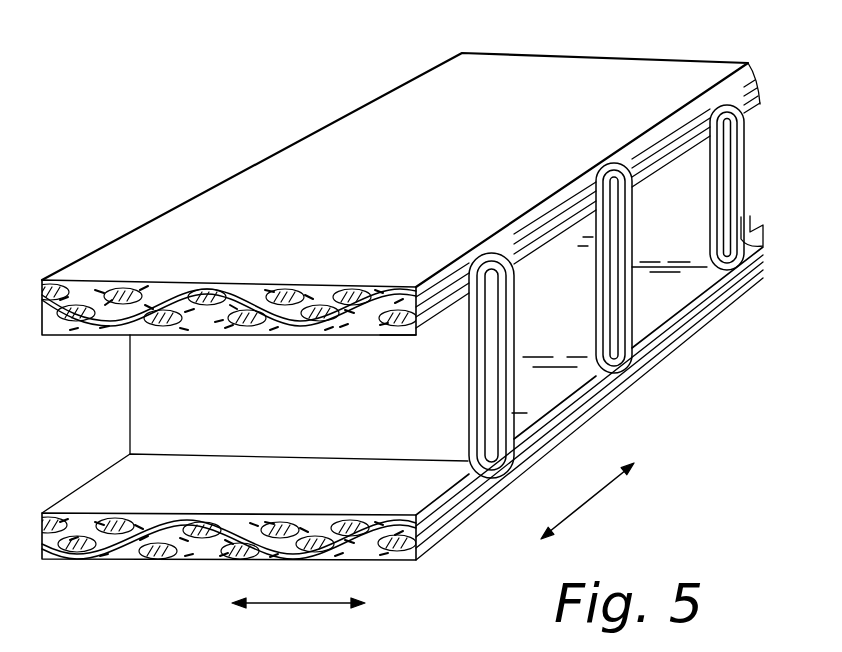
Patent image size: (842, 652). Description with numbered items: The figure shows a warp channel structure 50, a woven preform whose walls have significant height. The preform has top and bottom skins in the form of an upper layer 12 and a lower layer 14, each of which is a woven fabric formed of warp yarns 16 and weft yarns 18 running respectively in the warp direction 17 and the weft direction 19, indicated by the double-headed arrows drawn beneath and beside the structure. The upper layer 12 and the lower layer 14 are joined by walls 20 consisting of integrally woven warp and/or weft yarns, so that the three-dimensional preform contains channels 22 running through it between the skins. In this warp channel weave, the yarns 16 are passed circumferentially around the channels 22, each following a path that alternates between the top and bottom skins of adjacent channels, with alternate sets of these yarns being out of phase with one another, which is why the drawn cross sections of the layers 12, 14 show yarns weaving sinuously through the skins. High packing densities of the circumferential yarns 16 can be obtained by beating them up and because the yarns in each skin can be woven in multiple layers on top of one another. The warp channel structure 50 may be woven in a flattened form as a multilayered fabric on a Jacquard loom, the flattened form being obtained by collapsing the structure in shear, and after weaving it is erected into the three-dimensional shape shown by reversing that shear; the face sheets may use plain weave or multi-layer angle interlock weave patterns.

The warp channel structure 50 is at (232, 148).
The upper layer 12 is at (756, 85).
The lower layer 14 is at (430, 386).
The warp yarns 16 is at (215, 286).
The weft yarns 18 is at (408, 332).
The walls 20 is at (746, 160).
The channels 22 is at (582, 342).
The warp direction 17 is at (303, 603).
The weft direction 19 is at (593, 498).